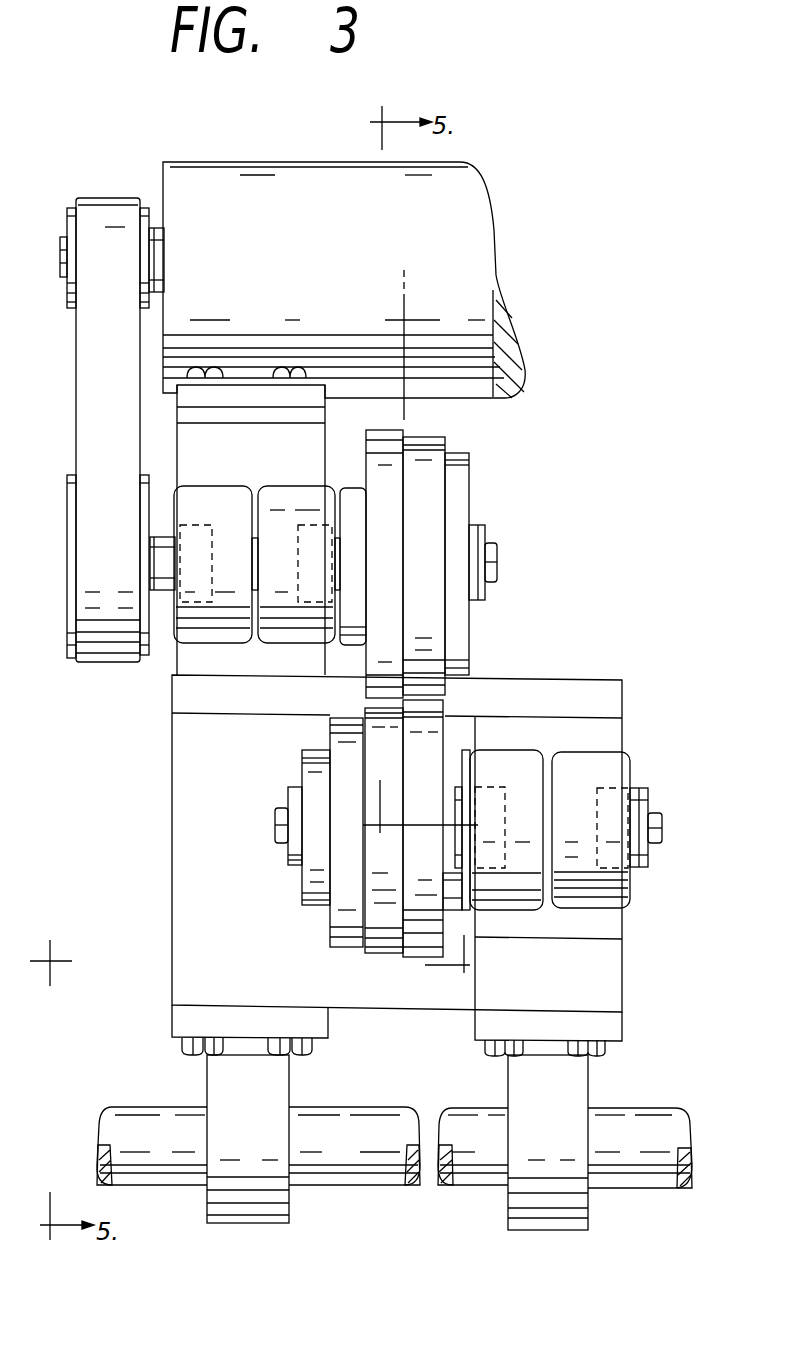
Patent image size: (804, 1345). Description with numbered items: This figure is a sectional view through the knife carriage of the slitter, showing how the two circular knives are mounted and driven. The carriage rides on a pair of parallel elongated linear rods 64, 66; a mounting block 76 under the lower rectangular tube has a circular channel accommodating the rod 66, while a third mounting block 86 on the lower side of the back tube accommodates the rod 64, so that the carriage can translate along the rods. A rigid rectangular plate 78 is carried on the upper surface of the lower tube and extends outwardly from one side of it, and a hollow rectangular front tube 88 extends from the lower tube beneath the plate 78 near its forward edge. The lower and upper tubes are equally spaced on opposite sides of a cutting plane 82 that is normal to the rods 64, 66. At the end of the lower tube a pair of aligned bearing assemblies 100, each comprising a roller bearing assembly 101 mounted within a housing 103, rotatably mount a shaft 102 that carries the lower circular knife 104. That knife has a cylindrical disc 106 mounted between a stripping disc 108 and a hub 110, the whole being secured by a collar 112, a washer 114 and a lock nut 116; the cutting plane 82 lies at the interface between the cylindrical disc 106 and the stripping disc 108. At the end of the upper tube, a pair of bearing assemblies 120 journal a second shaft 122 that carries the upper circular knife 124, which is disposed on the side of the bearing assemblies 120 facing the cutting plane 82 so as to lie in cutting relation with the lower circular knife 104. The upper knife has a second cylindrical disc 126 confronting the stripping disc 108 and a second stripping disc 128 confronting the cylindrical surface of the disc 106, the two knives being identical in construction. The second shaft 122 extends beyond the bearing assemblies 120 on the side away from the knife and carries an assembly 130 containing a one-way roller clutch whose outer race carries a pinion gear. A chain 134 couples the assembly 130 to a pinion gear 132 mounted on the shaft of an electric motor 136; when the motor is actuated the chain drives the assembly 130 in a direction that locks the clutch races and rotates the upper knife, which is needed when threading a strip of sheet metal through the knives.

The elongated linear rod 64 is at (128, 1130).
The elongated linear rod 66 is at (488, 1158).
The mounting block 76 is at (525, 1085).
The rigid rectangular plate 78 is at (276, 706).
The cutting plane 82 is at (404, 293).
The third mounting block 86 is at (228, 1074).
The front tube 88 is at (205, 860).
The bearing assembly 100 is at (640, 754).
The roller bearing assembly 101 is at (608, 800).
The shaft 102 is at (548, 808).
The housing 103 is at (612, 880).
The lower circular knife 104 is at (278, 796).
The cylindrical disc 106 is at (425, 948).
The stripping disc 108 is at (385, 945).
The hub 110 is at (453, 900).
The collar 112 is at (344, 908).
The washer 114 is at (315, 876).
The lock nut 116 is at (275, 833).
The bearing assembly 120 is at (278, 478).
The second shaft 122 is at (250, 548).
The upper circular knife 124 is at (418, 436).
The second cylindrical disc 126 is at (384, 450).
The second stripping disc 128 is at (430, 495).
The assembly 130 is at (72, 521).
The pinion gear 132 is at (90, 222).
The chain 134 is at (80, 410).
The electric motor 136 is at (296, 232).